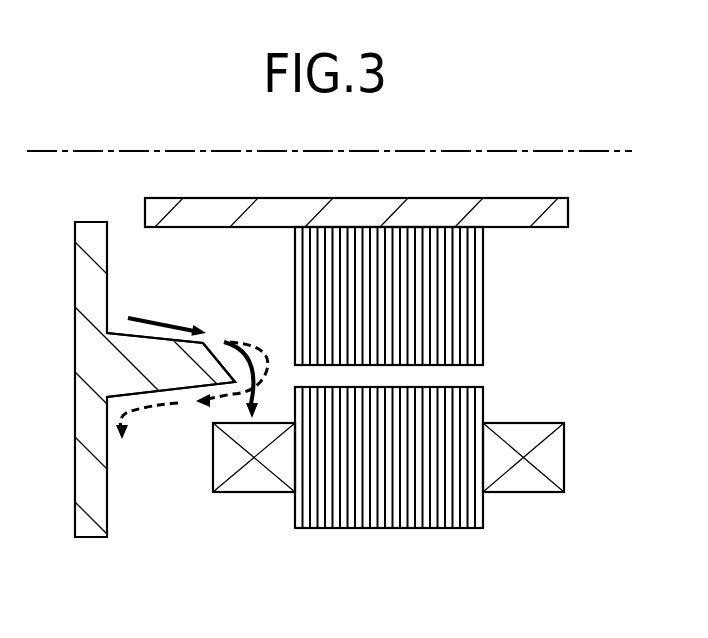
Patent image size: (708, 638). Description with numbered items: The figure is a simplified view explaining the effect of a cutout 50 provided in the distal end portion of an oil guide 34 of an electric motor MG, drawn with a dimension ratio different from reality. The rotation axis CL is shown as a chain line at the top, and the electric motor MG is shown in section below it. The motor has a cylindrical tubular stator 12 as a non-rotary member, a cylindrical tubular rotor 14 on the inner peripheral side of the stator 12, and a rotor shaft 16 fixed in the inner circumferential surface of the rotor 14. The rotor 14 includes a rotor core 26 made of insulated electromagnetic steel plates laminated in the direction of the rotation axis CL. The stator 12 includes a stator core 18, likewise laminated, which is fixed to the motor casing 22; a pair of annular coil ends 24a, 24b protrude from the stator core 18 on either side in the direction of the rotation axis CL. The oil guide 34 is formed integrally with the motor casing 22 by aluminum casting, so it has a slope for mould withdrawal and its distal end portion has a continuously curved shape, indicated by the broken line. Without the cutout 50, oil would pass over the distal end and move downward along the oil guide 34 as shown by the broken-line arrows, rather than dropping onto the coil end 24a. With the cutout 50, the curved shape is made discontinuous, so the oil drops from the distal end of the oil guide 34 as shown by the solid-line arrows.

The stator 12 is at (446, 562).
The rotor 14 is at (422, 296).
The rotor shaft 16 is at (198, 208).
The stator core 18 is at (372, 507).
The motor casing 22 is at (92, 507).
The coil end 24a is at (255, 482).
The coil end 24b is at (528, 483).
The rotor core 26 is at (458, 345).
The oil guide 34 is at (157, 362).
The cutout 50 is at (220, 347).
The rotation axis CL is at (595, 151).
The electric motor MG is at (590, 344).